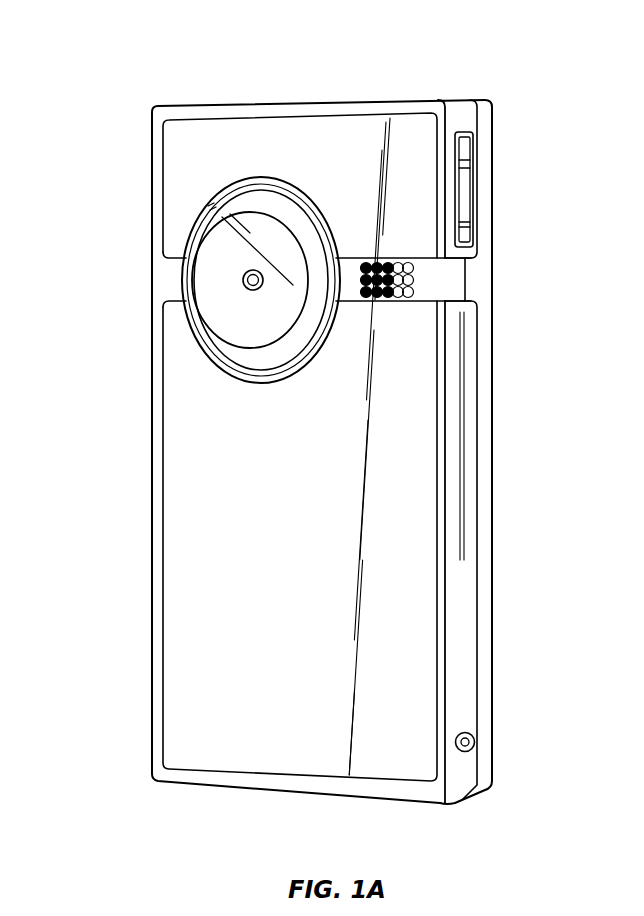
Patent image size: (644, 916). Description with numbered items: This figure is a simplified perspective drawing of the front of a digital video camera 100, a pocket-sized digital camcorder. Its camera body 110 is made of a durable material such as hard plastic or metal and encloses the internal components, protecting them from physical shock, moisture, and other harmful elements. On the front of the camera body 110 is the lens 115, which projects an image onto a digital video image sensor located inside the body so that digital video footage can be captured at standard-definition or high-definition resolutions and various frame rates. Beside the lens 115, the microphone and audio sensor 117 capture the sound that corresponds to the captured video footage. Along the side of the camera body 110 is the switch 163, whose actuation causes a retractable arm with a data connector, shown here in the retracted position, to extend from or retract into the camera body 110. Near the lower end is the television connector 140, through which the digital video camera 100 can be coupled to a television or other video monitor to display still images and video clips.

The digital video camera 100 is at (448, 68).
The camera body 110 is at (477, 287).
The lens 115 is at (232, 308).
The microphone and audio sensor 117 is at (392, 318).
The switch 163 is at (461, 200).
The television connector 140 is at (470, 742).